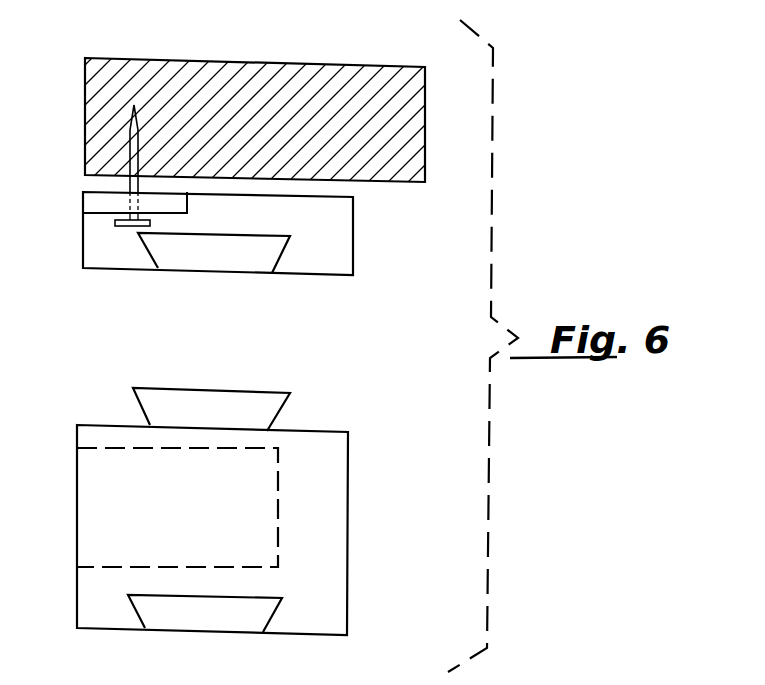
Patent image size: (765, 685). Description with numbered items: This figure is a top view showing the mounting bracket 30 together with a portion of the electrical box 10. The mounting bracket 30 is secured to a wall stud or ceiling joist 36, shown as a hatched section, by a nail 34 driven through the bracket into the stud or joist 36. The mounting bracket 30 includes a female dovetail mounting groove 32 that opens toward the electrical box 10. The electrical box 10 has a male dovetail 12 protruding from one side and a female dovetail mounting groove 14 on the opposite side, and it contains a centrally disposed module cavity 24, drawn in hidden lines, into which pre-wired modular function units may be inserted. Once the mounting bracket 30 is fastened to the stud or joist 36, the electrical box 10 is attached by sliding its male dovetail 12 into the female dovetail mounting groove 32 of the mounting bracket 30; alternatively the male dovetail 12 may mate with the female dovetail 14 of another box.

The electrical box 10 is at (333, 589).
The male dovetail 12 is at (262, 403).
The female dovetail mounting groove 14 is at (240, 620).
The module cavity 24 is at (110, 493).
The mounting bracket 30 is at (337, 247).
The female dovetail mounting groove 32 is at (244, 258).
The nail 34 is at (132, 128).
The wall stud or ceiling joist 36 is at (415, 137).